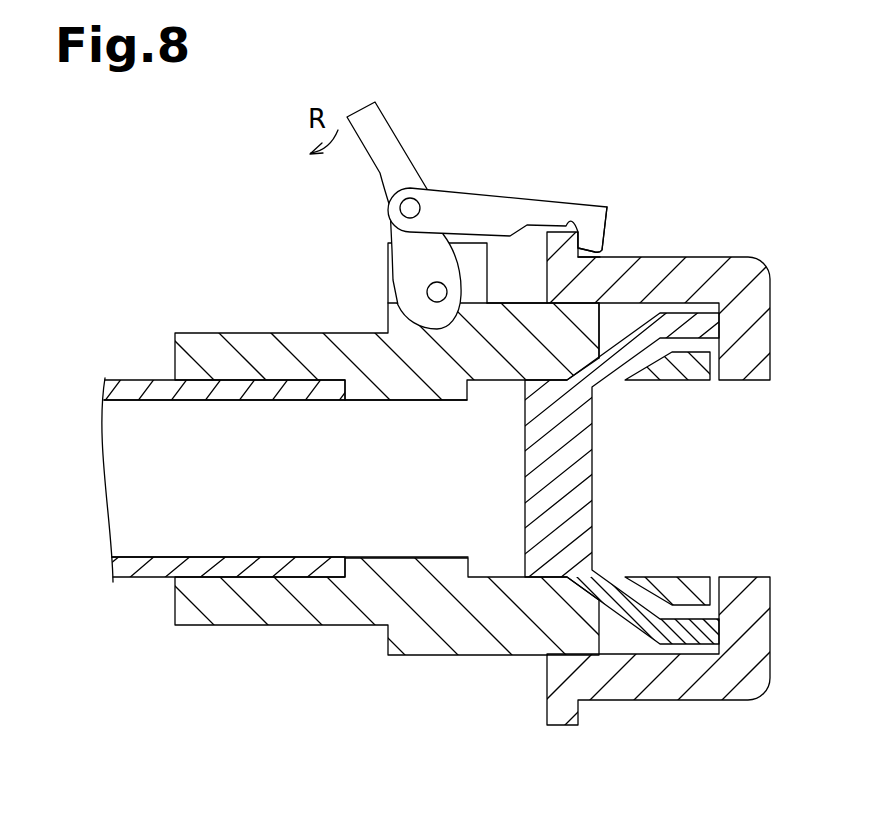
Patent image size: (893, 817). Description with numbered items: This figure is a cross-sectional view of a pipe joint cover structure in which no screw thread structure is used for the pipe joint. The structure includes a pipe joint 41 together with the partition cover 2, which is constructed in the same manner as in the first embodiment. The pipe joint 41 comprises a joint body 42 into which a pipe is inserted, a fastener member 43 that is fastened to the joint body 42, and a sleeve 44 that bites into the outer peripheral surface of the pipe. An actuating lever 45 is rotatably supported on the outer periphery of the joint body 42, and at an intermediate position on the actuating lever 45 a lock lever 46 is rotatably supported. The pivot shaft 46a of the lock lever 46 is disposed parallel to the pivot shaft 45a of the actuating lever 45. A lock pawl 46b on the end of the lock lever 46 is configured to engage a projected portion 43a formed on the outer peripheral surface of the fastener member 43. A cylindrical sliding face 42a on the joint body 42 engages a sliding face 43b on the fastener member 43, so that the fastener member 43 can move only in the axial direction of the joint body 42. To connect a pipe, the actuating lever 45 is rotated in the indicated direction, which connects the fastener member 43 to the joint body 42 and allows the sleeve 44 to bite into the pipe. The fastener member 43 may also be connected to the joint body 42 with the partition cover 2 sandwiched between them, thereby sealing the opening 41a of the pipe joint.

The partition cover 2 is at (594, 478).
The pipe joint 41 is at (170, 218).
The opening 41a is at (446, 473).
The joint body 42 is at (256, 333).
The cylindrical sliding face 42a is at (517, 301).
The fastener member 43 is at (733, 257).
The projected portion 43a is at (600, 253).
The sliding face 43b is at (612, 308).
The sleeve 44 is at (665, 381).
The actuating lever 45 is at (396, 130).
The pivot shaft 45a is at (427, 291).
The lock lever 46 is at (498, 192).
The pivot shaft 46a is at (389, 206).
The lock pawl 46b is at (582, 205).